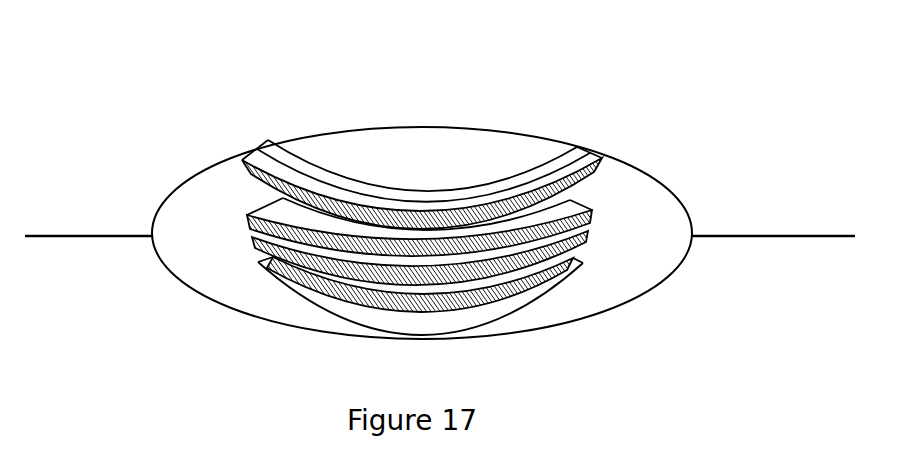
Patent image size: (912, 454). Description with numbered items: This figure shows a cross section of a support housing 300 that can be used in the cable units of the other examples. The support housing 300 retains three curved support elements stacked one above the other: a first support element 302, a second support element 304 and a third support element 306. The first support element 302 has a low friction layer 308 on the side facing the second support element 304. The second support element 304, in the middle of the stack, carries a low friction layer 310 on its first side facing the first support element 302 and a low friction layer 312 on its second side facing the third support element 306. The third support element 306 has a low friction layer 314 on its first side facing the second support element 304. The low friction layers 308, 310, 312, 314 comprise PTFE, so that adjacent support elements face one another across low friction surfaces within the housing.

The support housing 300 is at (360, 127).
The first support element 302 is at (537, 167).
The low friction layer 308 is at (578, 147).
The low friction layer 310 is at (281, 199).
The second support element 304 is at (571, 200).
The low friction layer 312 is at (247, 215).
The third support element 306 is at (563, 286).
The low friction layer 314 is at (258, 262).